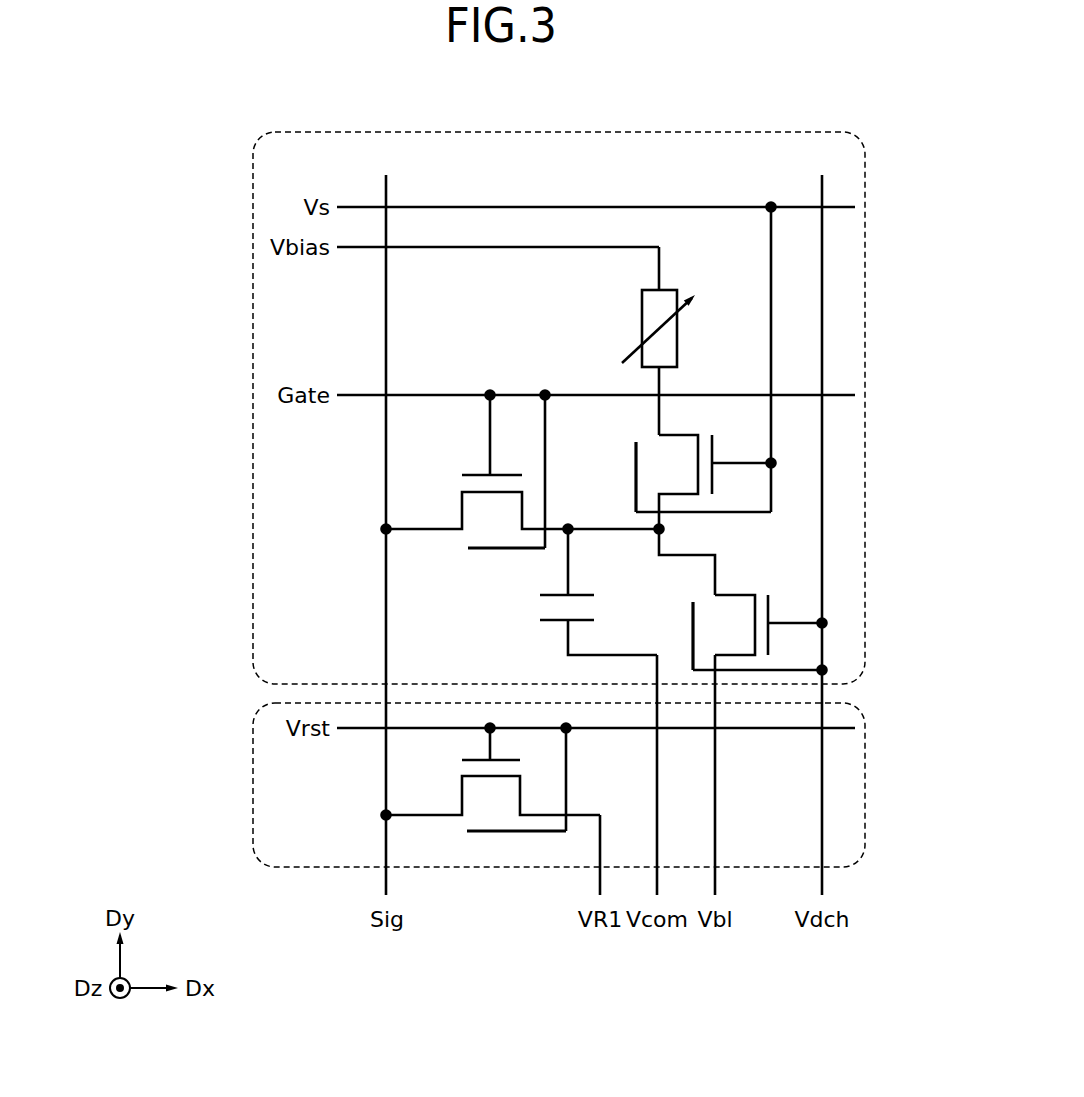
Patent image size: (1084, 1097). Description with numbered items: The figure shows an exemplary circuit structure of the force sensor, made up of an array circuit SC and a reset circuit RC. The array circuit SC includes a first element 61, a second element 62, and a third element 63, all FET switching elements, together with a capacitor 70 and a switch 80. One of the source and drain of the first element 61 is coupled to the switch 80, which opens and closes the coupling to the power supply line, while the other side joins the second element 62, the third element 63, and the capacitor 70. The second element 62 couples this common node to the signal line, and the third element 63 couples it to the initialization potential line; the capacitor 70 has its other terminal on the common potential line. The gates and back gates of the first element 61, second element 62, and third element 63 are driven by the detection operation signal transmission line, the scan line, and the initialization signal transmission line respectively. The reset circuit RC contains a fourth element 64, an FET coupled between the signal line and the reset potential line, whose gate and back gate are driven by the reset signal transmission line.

The switch 80 is at (692, 323).
The first element 61 is at (744, 444).
The second element 62 is at (450, 540).
The third element 63 is at (798, 607).
The fourth element 64 is at (455, 845).
The capacitor 70 is at (526, 608).
The array circuit SC is at (765, 131).
The reset circuit RC is at (252, 786).